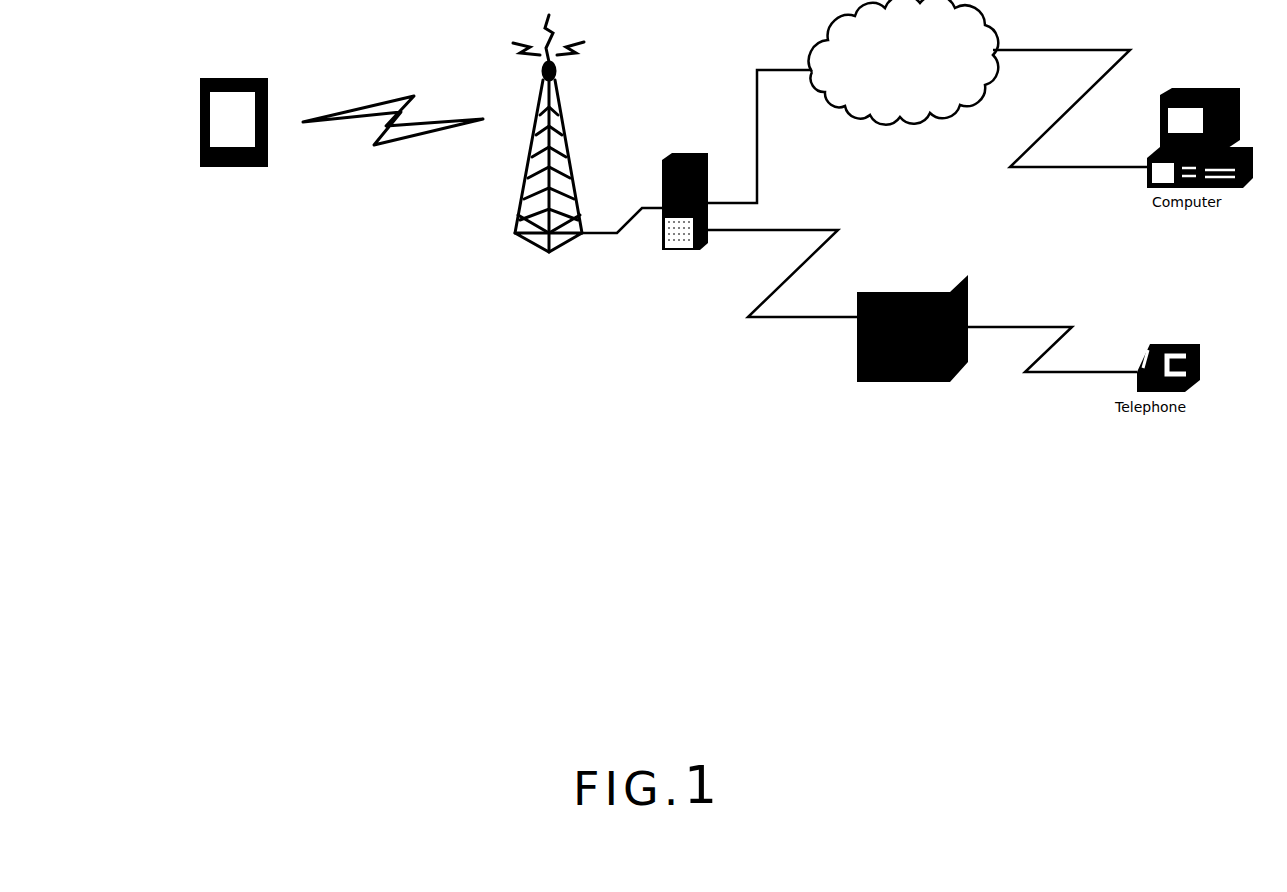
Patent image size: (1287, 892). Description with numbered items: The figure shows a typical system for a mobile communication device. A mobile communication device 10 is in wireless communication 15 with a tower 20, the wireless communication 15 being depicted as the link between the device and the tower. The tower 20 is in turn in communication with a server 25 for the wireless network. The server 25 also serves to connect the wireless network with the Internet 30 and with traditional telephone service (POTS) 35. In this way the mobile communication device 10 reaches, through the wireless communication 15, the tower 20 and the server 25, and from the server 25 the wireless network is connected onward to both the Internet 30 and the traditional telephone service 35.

The mobile communication device 10 is at (210, 137).
The wireless communication 15 is at (393, 138).
The tower 20 is at (583, 163).
The server 25 is at (752, 198).
The Internet 30 is at (978, 83).
The traditional telephone service (POTS) 35 is at (997, 346).